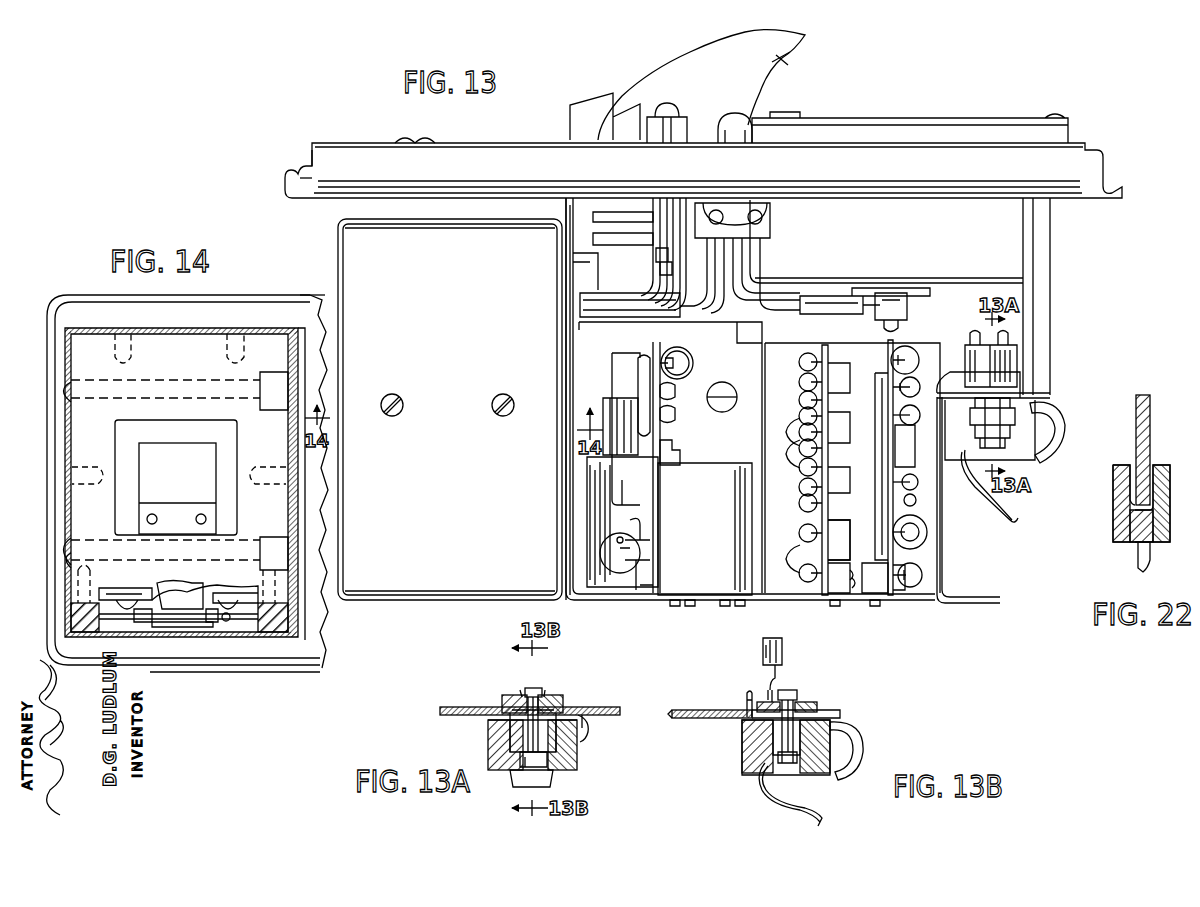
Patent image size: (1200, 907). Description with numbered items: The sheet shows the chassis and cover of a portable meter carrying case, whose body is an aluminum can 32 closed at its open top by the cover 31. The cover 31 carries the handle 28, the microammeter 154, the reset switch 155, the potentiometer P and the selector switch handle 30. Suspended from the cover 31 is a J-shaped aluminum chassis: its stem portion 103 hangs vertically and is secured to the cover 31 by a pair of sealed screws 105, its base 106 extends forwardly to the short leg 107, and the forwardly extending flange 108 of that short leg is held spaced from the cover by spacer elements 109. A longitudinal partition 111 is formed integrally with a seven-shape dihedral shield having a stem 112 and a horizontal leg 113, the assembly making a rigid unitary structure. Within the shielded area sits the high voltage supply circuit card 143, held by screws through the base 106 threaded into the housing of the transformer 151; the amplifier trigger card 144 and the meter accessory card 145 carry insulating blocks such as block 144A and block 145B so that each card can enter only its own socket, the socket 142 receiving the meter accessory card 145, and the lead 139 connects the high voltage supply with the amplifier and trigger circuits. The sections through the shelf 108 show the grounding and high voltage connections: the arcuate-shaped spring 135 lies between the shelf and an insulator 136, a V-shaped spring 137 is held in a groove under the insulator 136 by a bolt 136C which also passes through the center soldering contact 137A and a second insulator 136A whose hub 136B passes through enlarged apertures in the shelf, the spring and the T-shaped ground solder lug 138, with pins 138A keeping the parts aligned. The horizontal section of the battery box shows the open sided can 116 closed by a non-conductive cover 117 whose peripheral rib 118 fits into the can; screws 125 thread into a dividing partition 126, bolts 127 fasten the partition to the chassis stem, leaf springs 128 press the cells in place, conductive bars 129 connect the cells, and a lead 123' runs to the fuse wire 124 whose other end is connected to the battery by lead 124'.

In FIG. 13, the cover 31 is at (340, 150).
In FIG. 13, the screws 105 is at (406, 142).
In FIG. 14, the screws 105 is at (302, 298).
In FIG. 13, the selector switch handle 30 is at (600, 102).
In FIG. 13, the handle 28 is at (710, 85).
In FIG. 13, the reset switch 155 is at (737, 113).
In FIG. 13, the potentiometer P is at (650, 126).
In FIG. 13, the microammeter 154 is at (943, 128).
In FIG. 13, the aluminum can 116 is at (345, 245).
In FIG. 14, the aluminum can 116 is at (189, 334).
In FIG. 13, the spacer elements 109 is at (1052, 302).
In FIG. 13, the stem portion 103 is at (567, 366).
In FIG. 13, the horizontal leg 113 is at (642, 322).
In FIG. 13, the longitudinal partition 111 is at (745, 350).
In FIG. 13, the stem 112 is at (768, 423).
In FIG. 13, the transformer 151 is at (712, 478).
In FIG. 13, the forwardly extending flange 108 is at (1052, 395).
In FIG. 13A, the forwardly extending flange 108 is at (463, 707).
In FIG. 13B, the forwardly extending flange 108 is at (685, 718).
In FIG. 13, the arcuate-shaped spring 135 is at (1062, 410).
In FIG. 13A, the arcuate-shaped spring 135 is at (585, 735).
In FIG. 13B, the arcuate-shaped spring 135 is at (863, 748).
In FIG. 13, the spring 137 is at (1015, 520).
In FIG. 13A, the spring 137 is at (513, 782).
In FIG. 13B, the spring 137 is at (775, 795).
In FIG. 13, the short leg 107 is at (945, 550).
In FIG. 13, the circuit card 143 is at (652, 590).
In FIG. 13, the base 106 is at (783, 598).
In FIG. 13, the circuit card 144 is at (825, 593).
In FIG. 13, the insulating block 144A is at (842, 593).
In FIG. 13, the socket block 145B is at (872, 598).
In FIG. 13, the circuit card 145 is at (895, 590).
In FIG. 22, the circuit card 145 is at (1136, 428).
In FIG. 14, the can 32 is at (70, 289).
In FIG. 14, the bolts 127 is at (61, 392).
In FIG. 14, the dividing partition 126 is at (85, 424).
In FIG. 14, the leaf spring 128 is at (190, 452).
In FIG. 14, the conductive bars 129 is at (127, 596).
In FIG. 14, the peripheral rib 118 is at (69, 608).
In FIG. 14, the lead 124' is at (178, 635).
In FIG. 14, the fuse wire 124 is at (182, 641).
In FIG. 14, the cover 117 is at (217, 628).
In FIG. 14, the lead 123' is at (253, 637).
In FIG. 14, the screws 125 is at (292, 632).
In FIG. 13A, the center soldering contact 137A is at (520, 690).
In FIG. 13B, the center soldering contact 137A is at (768, 676).
In FIG. 13A, the bolt 136C is at (538, 690).
In FIG. 13A, the second insulator 136A is at (565, 700).
In FIG. 13A, the ground solder lug 138 is at (578, 707).
In FIG. 13B, the ground solder lug 138 is at (745, 697).
In FIG. 13A, the pins 138A is at (488, 727).
In FIG. 13A, the hub 136B is at (488, 745).
In FIG. 13B, the hub 136B is at (750, 740).
In FIG. 13A, the insulator 136 is at (578, 760).
In FIG. 13B, the lead 139 is at (783, 662).
In FIG. 22, the socket 142 is at (1113, 522).